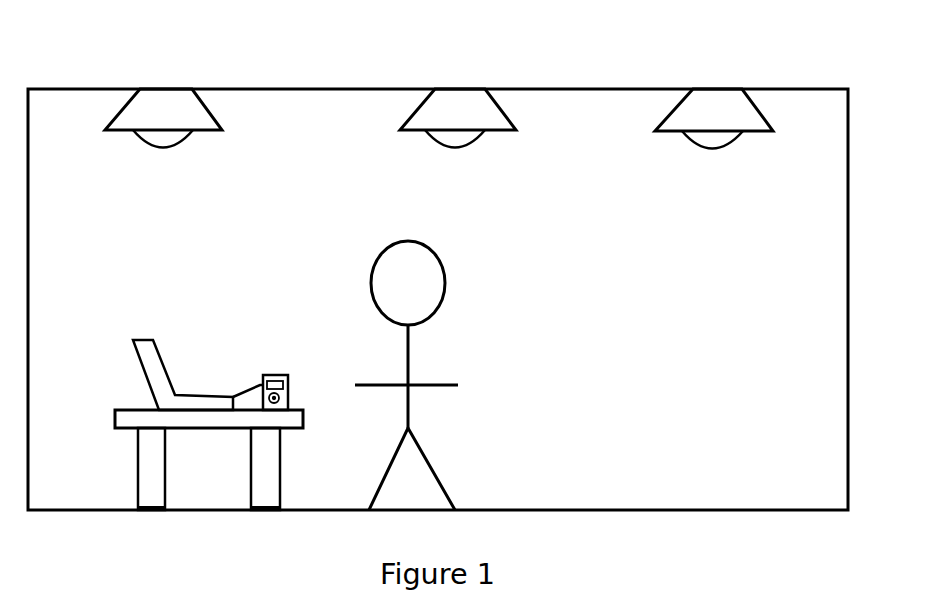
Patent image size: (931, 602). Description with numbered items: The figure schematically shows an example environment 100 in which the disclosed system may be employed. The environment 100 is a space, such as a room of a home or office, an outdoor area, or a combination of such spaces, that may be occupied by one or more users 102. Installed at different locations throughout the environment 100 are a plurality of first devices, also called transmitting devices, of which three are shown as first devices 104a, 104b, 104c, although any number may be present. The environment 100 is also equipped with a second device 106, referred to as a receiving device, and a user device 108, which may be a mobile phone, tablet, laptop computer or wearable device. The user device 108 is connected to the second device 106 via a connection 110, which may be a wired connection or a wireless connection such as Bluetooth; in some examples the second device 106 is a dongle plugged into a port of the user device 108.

The environment 100 is at (122, 64).
The user 102 is at (445, 283).
The first device 104a is at (222, 130).
The first device 104b is at (400, 130).
The first device 104c is at (655, 131).
The second device 106 is at (285, 368).
The user device 108 is at (155, 338).
The connection 110 is at (245, 392).